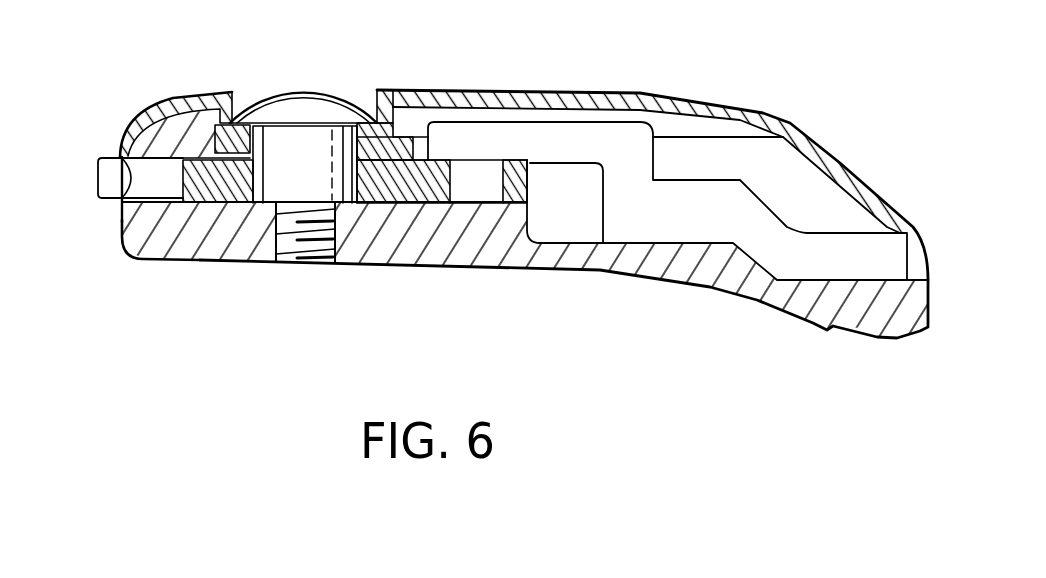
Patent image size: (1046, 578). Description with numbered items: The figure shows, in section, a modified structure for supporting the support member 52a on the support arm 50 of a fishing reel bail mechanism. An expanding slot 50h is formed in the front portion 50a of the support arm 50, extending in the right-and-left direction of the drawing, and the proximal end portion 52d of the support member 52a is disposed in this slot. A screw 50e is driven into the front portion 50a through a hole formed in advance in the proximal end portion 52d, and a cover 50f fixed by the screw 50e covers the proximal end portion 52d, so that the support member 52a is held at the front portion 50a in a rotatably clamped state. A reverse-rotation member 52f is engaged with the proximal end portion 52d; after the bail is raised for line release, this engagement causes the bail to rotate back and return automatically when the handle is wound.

The support arm 50 is at (497, 258).
The front portion of the support arm 50a is at (132, 239).
The expanding slot 50h is at (99, 174).
The screw 50e is at (312, 100).
The cover 50f is at (607, 98).
The support member 52a is at (150, 172).
The proximal end portion 52d is at (225, 196).
The reverse-rotation member 52f is at (672, 228).